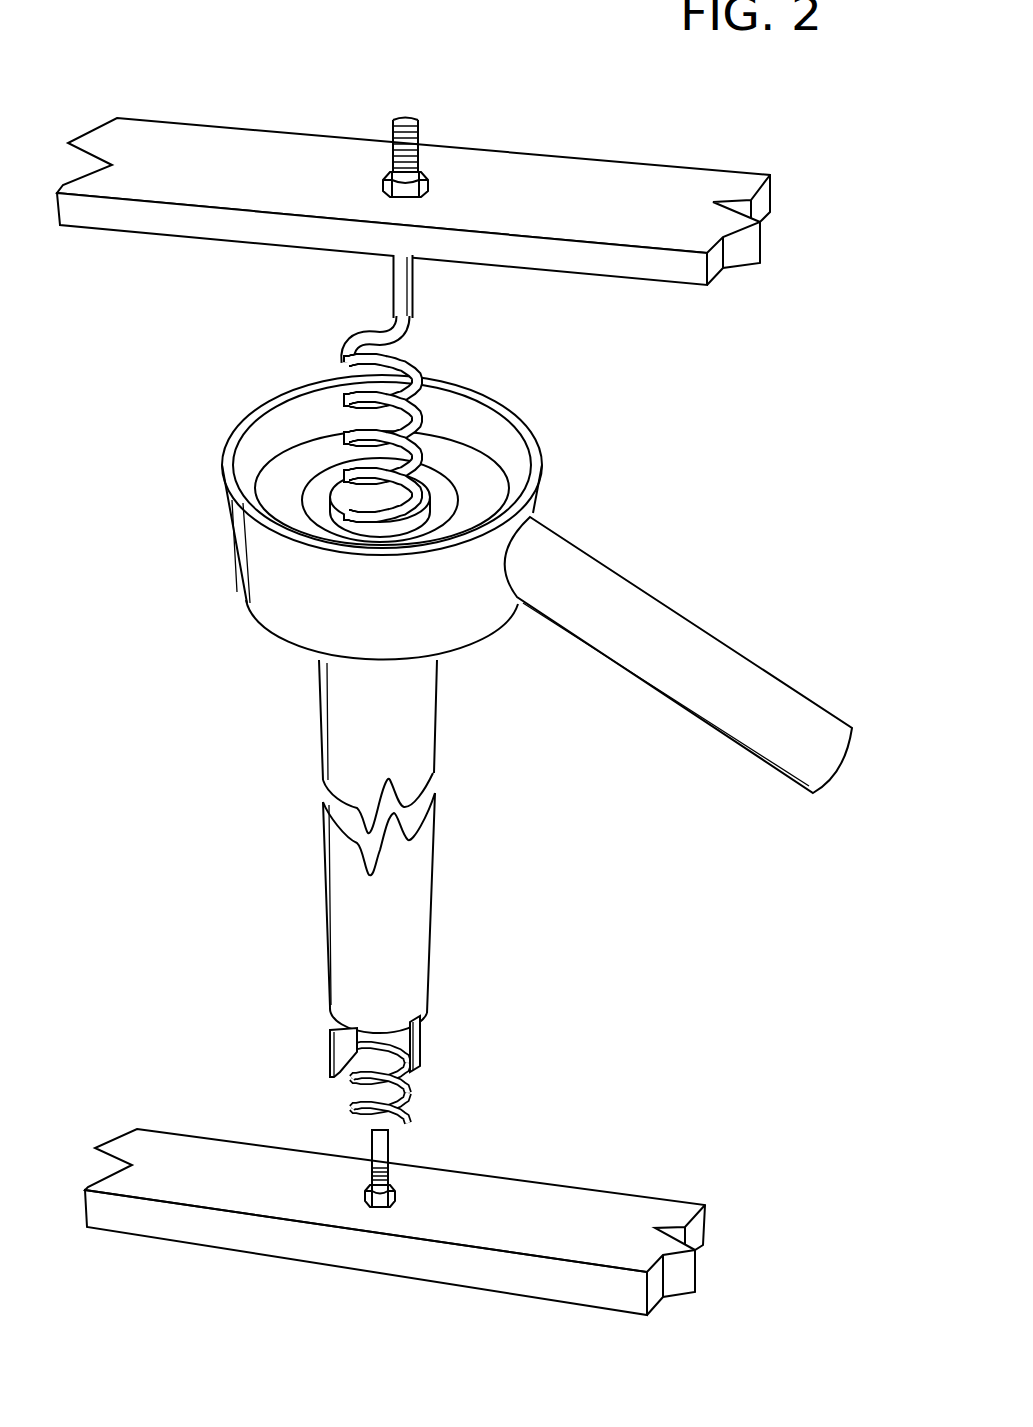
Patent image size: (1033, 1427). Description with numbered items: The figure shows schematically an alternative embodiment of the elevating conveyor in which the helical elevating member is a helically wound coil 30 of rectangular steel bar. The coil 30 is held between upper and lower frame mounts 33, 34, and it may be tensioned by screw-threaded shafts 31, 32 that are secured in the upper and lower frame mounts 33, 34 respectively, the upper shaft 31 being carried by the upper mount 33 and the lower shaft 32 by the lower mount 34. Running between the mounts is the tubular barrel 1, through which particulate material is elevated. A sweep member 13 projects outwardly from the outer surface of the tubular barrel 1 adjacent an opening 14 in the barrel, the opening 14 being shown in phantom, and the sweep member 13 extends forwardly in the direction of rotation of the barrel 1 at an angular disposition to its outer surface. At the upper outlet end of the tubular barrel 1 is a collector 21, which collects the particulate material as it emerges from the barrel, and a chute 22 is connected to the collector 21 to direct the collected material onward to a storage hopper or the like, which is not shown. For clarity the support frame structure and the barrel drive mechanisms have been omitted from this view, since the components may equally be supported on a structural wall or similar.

The tubular barrel 1 is at (415, 713).
The sweep member 13 is at (420, 1055).
The opening 14 is at (405, 1082).
The collector 21 is at (272, 565).
The chute 22 is at (680, 650).
The helically wound coil 30 is at (427, 432).
The screw-threaded shaft 31 is at (405, 118).
The screw-threaded shaft 32 is at (365, 1172).
The upper frame mount 33 is at (512, 188).
The lower frame mount 34 is at (548, 1217).